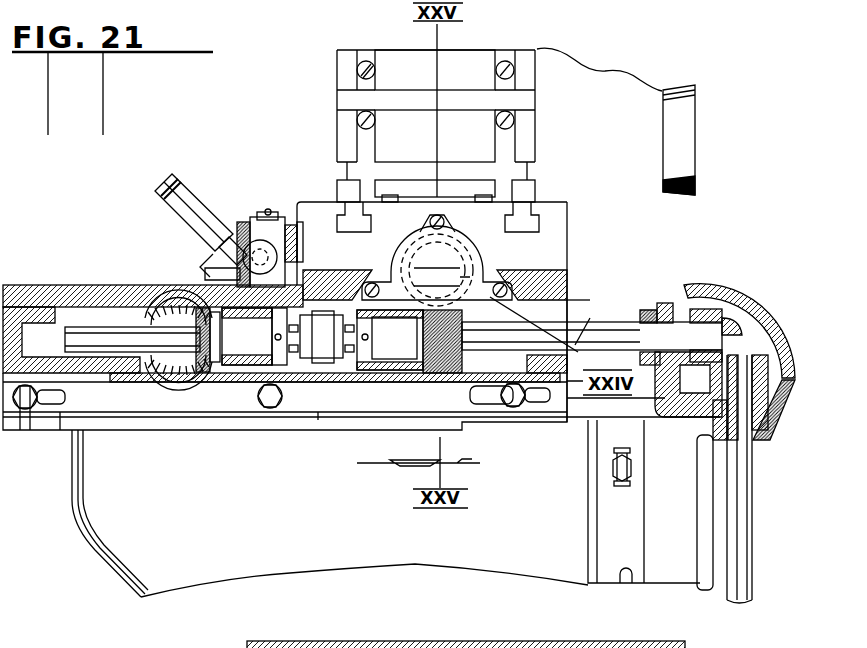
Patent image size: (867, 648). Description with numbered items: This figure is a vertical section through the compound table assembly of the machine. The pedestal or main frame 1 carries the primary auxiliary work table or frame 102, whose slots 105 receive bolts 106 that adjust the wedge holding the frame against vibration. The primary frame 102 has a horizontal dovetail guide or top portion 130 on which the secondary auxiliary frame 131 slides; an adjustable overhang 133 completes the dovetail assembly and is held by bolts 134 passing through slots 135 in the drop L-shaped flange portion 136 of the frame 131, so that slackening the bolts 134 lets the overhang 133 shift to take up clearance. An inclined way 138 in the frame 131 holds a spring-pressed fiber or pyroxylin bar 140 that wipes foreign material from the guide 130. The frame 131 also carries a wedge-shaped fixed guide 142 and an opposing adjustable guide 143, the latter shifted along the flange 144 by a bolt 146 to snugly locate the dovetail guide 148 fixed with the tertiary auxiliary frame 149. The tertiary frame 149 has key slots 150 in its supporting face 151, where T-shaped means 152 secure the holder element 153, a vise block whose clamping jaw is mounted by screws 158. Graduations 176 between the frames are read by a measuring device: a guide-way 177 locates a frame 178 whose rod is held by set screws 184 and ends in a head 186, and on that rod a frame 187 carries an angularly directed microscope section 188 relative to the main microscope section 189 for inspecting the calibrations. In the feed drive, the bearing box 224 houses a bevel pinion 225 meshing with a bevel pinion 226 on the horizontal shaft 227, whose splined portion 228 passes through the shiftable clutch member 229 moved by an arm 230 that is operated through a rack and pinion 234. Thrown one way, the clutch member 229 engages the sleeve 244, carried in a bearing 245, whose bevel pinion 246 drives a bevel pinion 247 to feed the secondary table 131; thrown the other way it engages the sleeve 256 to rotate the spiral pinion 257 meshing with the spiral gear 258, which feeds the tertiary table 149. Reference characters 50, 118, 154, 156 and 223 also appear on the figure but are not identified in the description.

The main frame 1 is at (683, 592).
The knife 50 is at (666, 147).
The primary auxiliary frame 102 is at (95, 460).
The slots 105 is at (630, 448).
The bolts 106 is at (624, 486).
The bed 118 is at (150, 563).
The dovetail guide 130 is at (566, 430).
The secondary auxiliary frame 131 is at (188, 430).
The adjustable overhang 133 is at (320, 414).
The bolts 134 is at (66, 402).
The slots 135 is at (58, 430).
The flange portion 136 is at (350, 432).
The inclined way 138 is at (582, 345).
The fiber or pyroxylin bar 140 is at (642, 333).
The wedge-shaped fixed guide 142 is at (380, 270).
The adjustable guide 143 is at (524, 272).
The flange 144 is at (573, 292).
The bolt 146 is at (578, 312).
The dovetail guide 148 is at (390, 340).
The tertiary auxiliary frame 149 is at (570, 214).
The key slots 150 is at (570, 203).
The supporting face 151 is at (320, 186).
The T-shaped means 152 is at (537, 196).
The holder element 153 is at (537, 122).
The base plate 154 is at (481, 197).
The plate 156 is at (378, 150).
The screws 158 is at (368, 110).
The scales or graduations 176 is at (290, 222).
The guide-way 177 is at (235, 273).
The frame 178 is at (222, 225).
The set screws 184 is at (316, 240).
The head 186 is at (256, 214).
The frame 187 is at (203, 248).
The angularly directed microscope section 188 is at (167, 205).
The main microscope section 189 is at (278, 260).
The rod 223 is at (736, 602).
The bearing box 224 is at (706, 290).
The bevel pinion 225 is at (765, 358).
The bevel pinion 226 is at (728, 298).
The shaft 227 is at (645, 306).
The splined portion 228 is at (125, 276).
The clutch member 229 is at (320, 365).
The arm 230 is at (262, 394).
The pinion 234 is at (362, 615).
The sleeve 244 is at (254, 336).
The bearing 245 is at (156, 372).
The bevel pinion 246 is at (88, 340).
The bevel pinion 247 is at (120, 432).
The sleeve 256 is at (386, 370).
The spiral pinion 257 is at (472, 378).
The spiral gear 258 is at (437, 260).